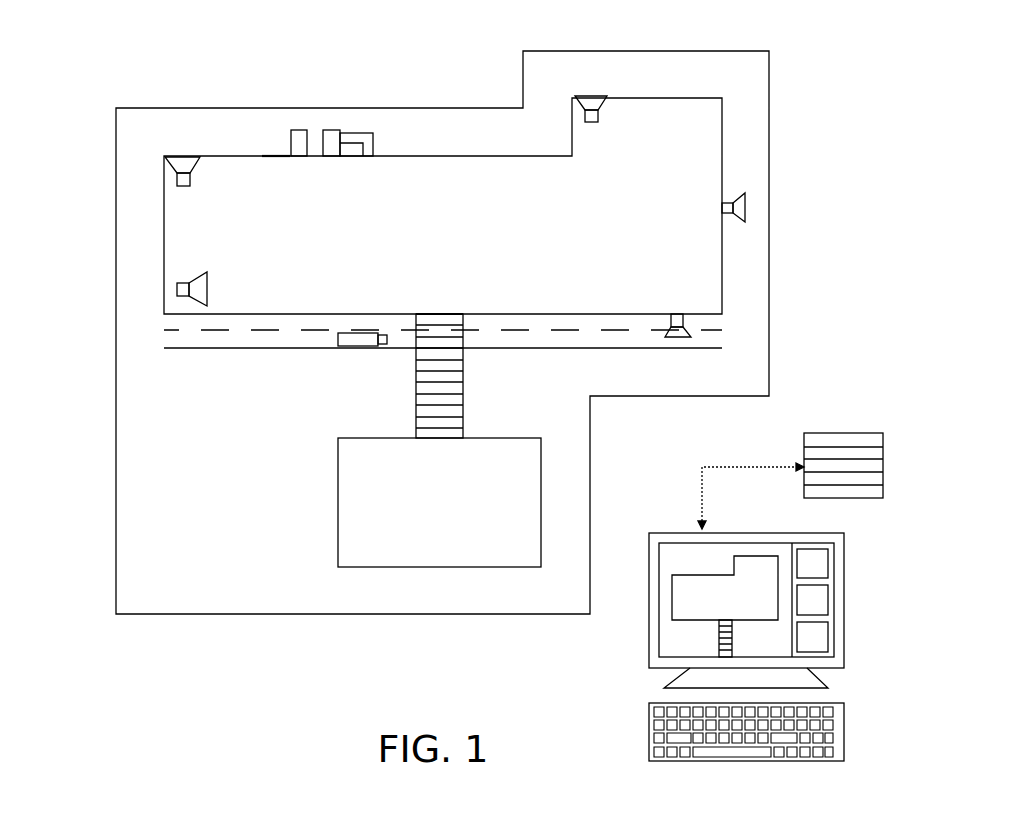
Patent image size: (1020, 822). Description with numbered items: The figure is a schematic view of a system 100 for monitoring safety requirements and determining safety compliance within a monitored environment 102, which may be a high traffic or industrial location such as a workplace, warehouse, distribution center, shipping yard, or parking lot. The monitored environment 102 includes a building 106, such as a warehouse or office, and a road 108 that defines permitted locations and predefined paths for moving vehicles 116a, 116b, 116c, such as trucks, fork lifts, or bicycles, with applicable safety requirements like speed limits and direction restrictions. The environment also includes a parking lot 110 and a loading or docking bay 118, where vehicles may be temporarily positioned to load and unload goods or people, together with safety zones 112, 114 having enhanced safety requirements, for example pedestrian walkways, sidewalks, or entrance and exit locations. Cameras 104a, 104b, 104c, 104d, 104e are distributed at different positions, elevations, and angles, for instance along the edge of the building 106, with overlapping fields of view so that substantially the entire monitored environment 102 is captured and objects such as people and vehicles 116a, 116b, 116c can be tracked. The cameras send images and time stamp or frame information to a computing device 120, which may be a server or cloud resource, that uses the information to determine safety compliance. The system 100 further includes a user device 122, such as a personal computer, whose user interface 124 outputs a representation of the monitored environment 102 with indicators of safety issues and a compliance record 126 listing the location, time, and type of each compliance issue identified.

The system 100 is at (904, 114).
The monitored environment 102 is at (158, 544).
The camera 104a is at (177, 288).
The camera 104b is at (175, 178).
The camera 104c is at (598, 117).
The camera 104d is at (745, 207).
The camera 104e is at (676, 314).
The building 106 is at (707, 126).
The road 108 is at (541, 338).
The parking lot 110 is at (352, 510).
The safety zone 112 is at (416, 385).
The safety zone 114 is at (360, 137).
The vehicle 116a is at (352, 347).
The vehicle 116b is at (299, 137).
The vehicle 116c is at (332, 137).
The loading or docking bay 118 is at (278, 155).
The computing device 120 is at (845, 433).
The user device 122 is at (848, 602).
The user interface 124 is at (677, 640).
The compliance record 126 is at (822, 570).